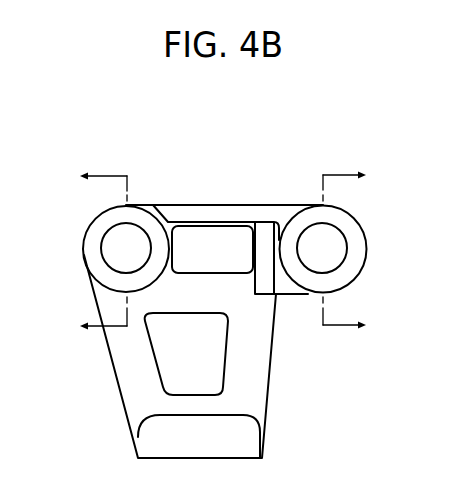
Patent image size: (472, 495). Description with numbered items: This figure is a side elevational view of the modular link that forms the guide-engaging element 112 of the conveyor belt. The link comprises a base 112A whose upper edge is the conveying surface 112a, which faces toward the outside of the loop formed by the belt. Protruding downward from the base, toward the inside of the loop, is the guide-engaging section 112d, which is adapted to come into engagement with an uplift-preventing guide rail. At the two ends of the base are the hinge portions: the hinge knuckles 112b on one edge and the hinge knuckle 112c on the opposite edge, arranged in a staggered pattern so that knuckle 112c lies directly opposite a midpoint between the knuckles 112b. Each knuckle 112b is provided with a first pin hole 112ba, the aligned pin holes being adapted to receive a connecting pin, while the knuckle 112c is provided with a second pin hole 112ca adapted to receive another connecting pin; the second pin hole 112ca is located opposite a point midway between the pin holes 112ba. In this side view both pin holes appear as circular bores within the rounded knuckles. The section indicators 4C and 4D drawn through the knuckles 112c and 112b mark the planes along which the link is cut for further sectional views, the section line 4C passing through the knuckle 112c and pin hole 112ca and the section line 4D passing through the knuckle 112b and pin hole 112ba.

The guide-engaging element 112 is at (94, 134).
The conveying surface 112a is at (207, 205).
The base 112A is at (261, 204).
The hinge knuckles 112b is at (366, 242).
The first pin hole 112ba is at (334, 264).
The hinge knuckle 112c is at (84, 248).
The second pin hole 112ca is at (112, 275).
The guide-engaging section 112d is at (238, 440).
The section line 4C is at (88, 251).
The section line 4D is at (361, 251).